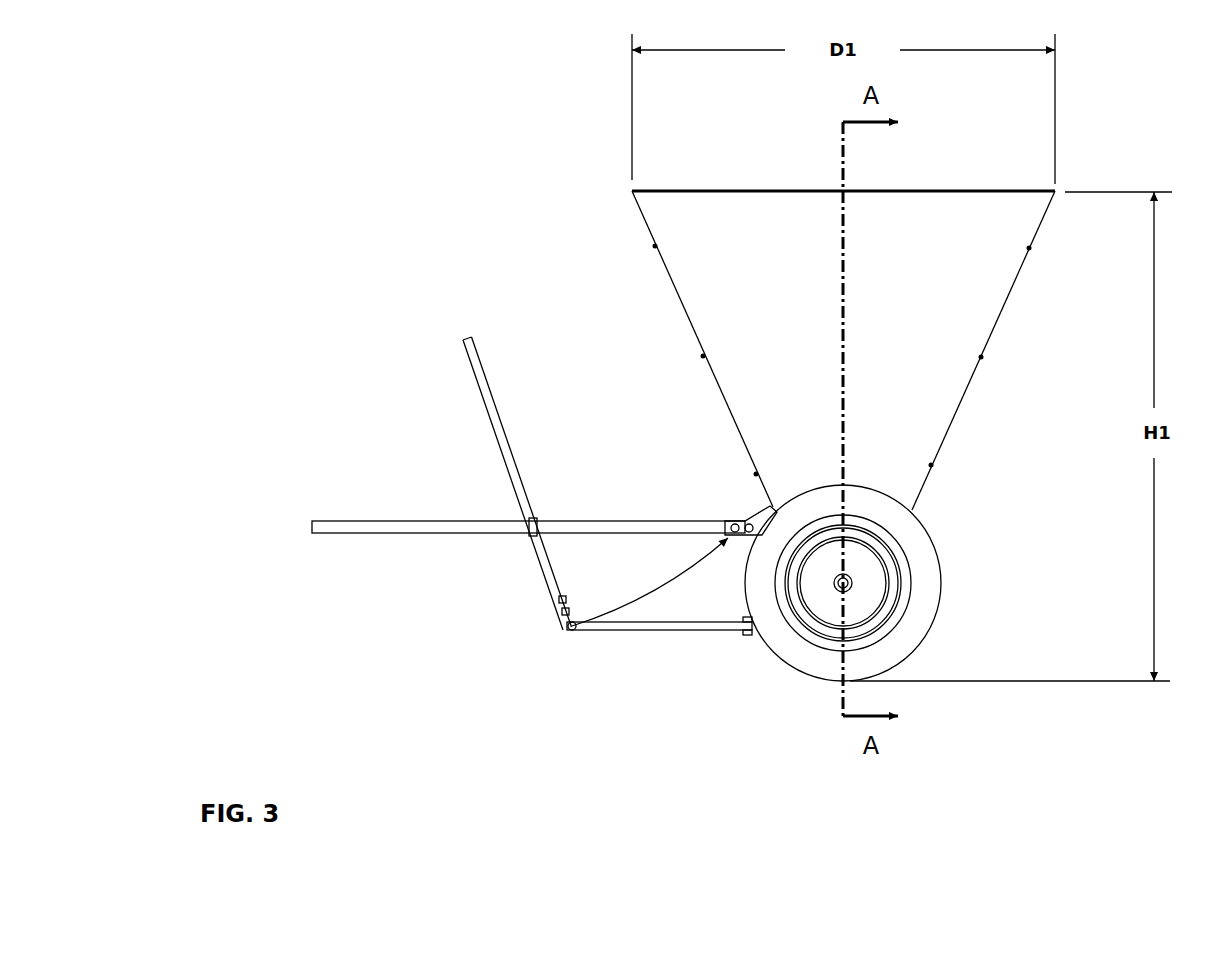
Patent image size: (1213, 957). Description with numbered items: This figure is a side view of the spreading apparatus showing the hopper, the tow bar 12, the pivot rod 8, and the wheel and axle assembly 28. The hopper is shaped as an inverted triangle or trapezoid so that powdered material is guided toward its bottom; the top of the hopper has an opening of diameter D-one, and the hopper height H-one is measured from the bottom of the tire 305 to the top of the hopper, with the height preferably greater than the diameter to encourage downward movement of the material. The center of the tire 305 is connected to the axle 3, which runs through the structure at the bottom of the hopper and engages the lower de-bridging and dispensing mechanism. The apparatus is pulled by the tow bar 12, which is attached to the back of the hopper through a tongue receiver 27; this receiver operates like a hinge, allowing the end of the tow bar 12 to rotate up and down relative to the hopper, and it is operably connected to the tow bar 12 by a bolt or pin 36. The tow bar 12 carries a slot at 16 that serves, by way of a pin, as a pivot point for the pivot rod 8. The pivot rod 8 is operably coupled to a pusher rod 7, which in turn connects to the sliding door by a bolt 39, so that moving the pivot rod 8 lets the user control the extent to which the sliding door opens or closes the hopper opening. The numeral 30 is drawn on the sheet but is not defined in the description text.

The hopper 30 is at (743, 307).
The tongue receiver 27 is at (740, 518).
The tow bar 12 is at (368, 521).
The slot 16 is at (535, 528).
The pivot rod 8 is at (467, 345).
The bolt or pin 36 is at (513, 619).
The pusher rod 7 is at (640, 628).
The bolt 39 is at (645, 691).
The tire 305 is at (924, 570).
The wheel and axle assembly 28 is at (888, 622).
The axle 3 is at (839, 590).